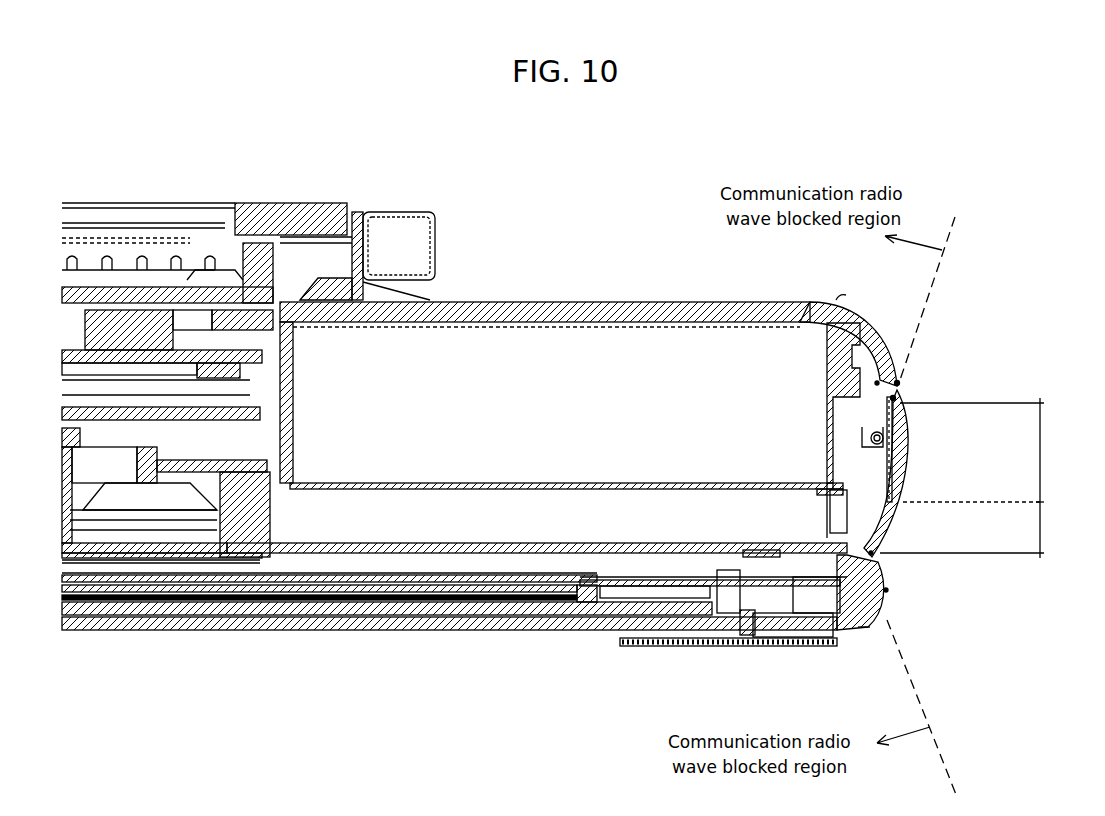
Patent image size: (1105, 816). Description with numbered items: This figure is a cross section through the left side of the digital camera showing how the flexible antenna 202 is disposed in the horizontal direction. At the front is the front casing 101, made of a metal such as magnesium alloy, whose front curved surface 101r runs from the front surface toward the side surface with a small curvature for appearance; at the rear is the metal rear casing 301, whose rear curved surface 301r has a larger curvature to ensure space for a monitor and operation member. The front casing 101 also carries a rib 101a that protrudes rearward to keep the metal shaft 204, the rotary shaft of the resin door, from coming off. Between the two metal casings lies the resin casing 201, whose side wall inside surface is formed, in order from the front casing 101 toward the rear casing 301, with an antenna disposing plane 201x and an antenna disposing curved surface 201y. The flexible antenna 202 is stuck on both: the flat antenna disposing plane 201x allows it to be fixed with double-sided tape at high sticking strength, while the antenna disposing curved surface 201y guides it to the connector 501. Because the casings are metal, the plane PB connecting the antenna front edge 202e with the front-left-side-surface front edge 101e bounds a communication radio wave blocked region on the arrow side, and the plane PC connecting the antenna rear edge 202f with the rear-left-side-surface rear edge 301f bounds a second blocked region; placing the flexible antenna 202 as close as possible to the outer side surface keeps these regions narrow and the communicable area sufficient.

The front casing 101 is at (579, 300).
The rib 101a is at (877, 383).
The front-left-side-surface front edge 101e is at (898, 381).
The front curved surface 101r is at (840, 298).
The resin casing 201 is at (920, 408).
The antenna disposing plane 201x is at (998, 478).
The antenna disposing curved surface 201y is at (988, 534).
The flexible antenna 202 is at (893, 503).
The antenna front edge 202e is at (894, 397).
The antenna rear edge 202f is at (872, 553).
The metal shaft 204 is at (878, 433).
The rear casing 301 is at (443, 630).
The rear-left-side-surface rear edge 301f is at (886, 590).
The rear curved surface 301r is at (863, 628).
The connector 501 is at (752, 553).
The plane PB is at (953, 215).
The plane PC is at (937, 747).